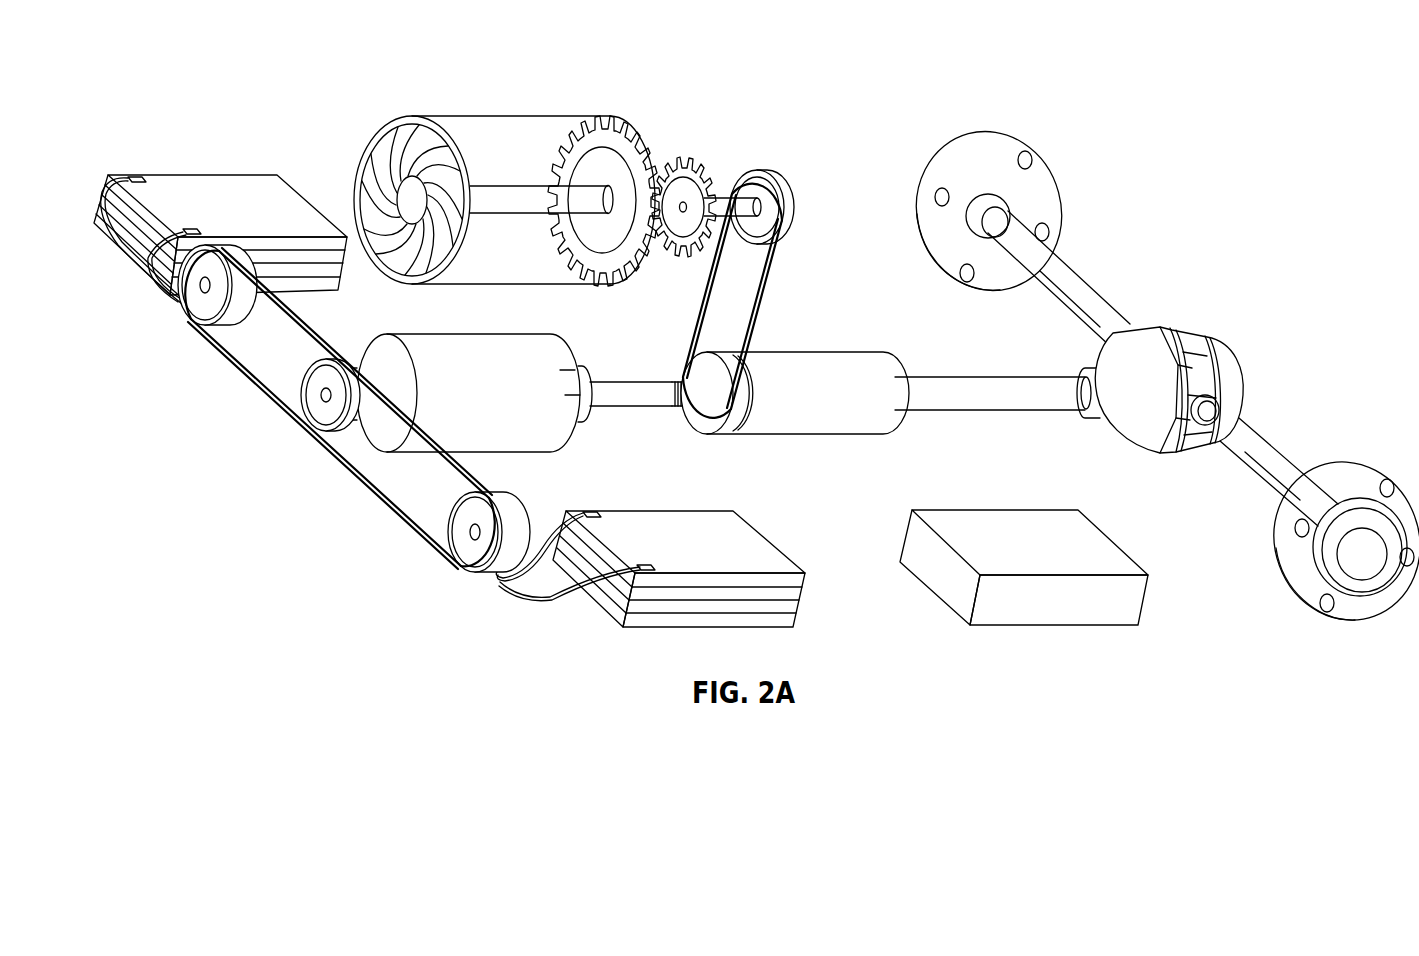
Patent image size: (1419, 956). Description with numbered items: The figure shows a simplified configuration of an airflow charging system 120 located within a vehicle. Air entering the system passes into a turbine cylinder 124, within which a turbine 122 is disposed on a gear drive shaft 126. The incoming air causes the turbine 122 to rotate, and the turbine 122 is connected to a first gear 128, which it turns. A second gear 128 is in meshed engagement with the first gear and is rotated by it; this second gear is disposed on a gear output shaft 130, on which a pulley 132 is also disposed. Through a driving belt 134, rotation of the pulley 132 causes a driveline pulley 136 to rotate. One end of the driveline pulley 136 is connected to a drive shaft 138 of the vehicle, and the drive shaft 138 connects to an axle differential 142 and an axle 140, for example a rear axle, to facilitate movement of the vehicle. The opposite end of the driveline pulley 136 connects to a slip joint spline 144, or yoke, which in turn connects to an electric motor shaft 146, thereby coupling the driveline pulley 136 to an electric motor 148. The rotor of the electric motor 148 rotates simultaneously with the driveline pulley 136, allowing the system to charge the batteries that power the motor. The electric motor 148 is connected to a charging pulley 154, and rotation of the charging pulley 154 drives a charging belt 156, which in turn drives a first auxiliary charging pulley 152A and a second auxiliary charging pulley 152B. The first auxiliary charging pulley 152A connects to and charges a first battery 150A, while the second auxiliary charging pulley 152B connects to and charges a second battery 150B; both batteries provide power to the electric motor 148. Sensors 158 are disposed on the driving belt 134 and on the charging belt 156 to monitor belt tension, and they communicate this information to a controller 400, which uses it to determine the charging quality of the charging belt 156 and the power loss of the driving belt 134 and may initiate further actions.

The airflow charging system 120 is at (960, 72).
The turbine 122 is at (407, 127).
The turbine cylinder 124 is at (455, 112).
The gear drive shaft 126 is at (490, 188).
The first gear and second gear 128 is at (638, 137).
The gear output shaft 130 is at (723, 200).
The pulley 132 is at (787, 207).
The driving belt 134 is at (773, 287).
The driveline pulley 136 is at (813, 433).
The drive shaft 138 is at (990, 410).
The axle 140 is at (1260, 440).
The axle differential 142 is at (1223, 357).
The slip joint spline 144 is at (693, 397).
The electric motor shaft 146 is at (610, 403).
The electric motor 148 is at (455, 347).
The first battery 150A is at (180, 173).
The second battery 150B is at (773, 562).
The first auxiliary charging pulley 152A is at (187, 313).
The second auxiliary charging pulley 152B is at (443, 548).
The charging pulley 154 is at (300, 413).
The charging belt 156 is at (388, 505).
The sensor 158 is at (255, 380).
The controller 400 is at (1120, 563).